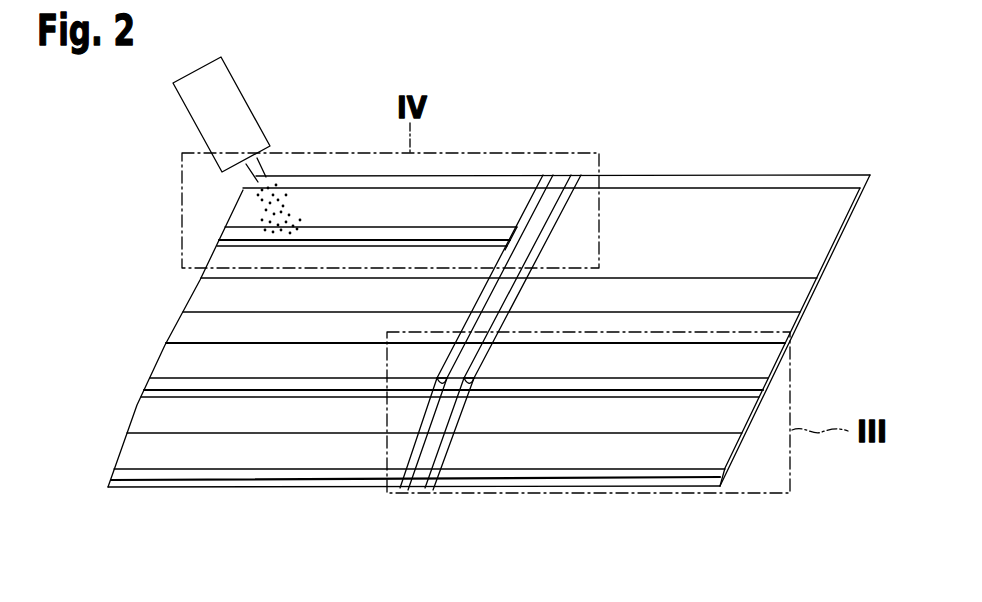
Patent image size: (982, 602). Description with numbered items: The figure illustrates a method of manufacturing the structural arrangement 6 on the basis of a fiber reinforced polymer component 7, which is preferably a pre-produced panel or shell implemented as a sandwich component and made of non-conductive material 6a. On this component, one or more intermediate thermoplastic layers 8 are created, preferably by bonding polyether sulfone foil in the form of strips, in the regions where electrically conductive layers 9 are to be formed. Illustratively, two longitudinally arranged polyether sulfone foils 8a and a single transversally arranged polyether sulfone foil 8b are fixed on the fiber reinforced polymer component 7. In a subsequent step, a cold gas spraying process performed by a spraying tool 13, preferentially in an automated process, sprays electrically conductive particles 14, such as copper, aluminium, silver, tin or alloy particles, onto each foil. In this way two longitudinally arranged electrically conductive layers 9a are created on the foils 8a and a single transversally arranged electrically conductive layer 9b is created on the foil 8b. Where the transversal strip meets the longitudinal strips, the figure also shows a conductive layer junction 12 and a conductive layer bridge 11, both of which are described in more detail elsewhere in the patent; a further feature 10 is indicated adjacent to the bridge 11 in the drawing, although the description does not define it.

The structural arrangement 6 is at (148, 315).
The non-conductive material 6a is at (712, 197).
The fiber reinforced polymer component 7 is at (842, 251).
The intermediate thermoplastic layer 8 is at (584, 168).
The polyether sulfone foil 8a is at (218, 243).
The polyether sulfone foil 8b is at (430, 493).
The electrically conductive layer 9 is at (549, 168).
The electrically conductive layer 9a is at (228, 222).
The electrically conductive layer 9b is at (402, 497).
The transition region 10 is at (460, 413).
The conductive layer bridge 11 is at (490, 413).
The conductive layer junction 12 is at (506, 216).
The spraying tool 13 is at (201, 131).
The electrically conductive particles 14 is at (300, 206).